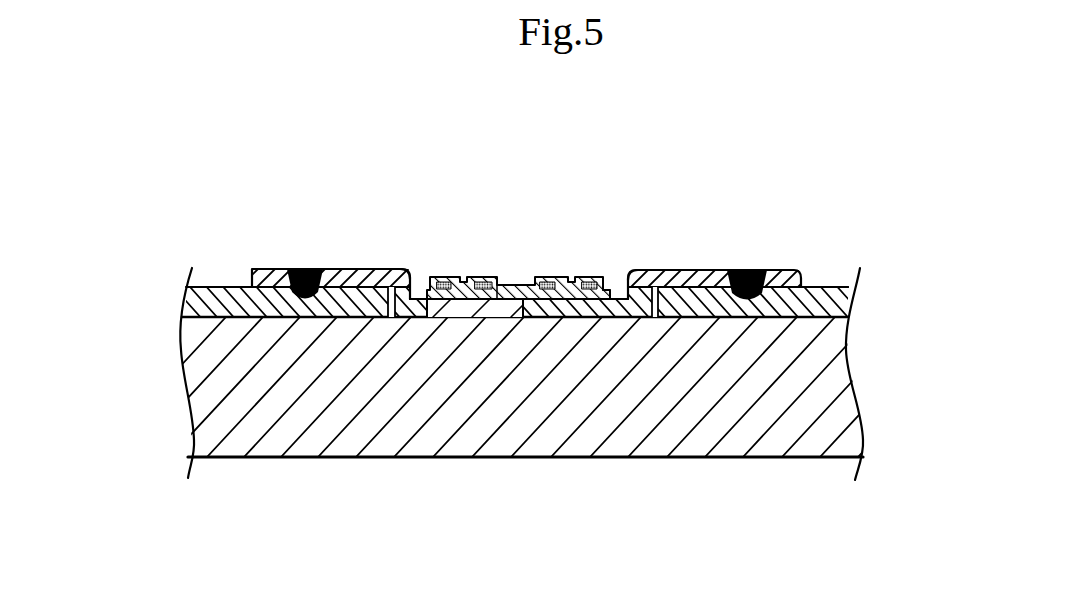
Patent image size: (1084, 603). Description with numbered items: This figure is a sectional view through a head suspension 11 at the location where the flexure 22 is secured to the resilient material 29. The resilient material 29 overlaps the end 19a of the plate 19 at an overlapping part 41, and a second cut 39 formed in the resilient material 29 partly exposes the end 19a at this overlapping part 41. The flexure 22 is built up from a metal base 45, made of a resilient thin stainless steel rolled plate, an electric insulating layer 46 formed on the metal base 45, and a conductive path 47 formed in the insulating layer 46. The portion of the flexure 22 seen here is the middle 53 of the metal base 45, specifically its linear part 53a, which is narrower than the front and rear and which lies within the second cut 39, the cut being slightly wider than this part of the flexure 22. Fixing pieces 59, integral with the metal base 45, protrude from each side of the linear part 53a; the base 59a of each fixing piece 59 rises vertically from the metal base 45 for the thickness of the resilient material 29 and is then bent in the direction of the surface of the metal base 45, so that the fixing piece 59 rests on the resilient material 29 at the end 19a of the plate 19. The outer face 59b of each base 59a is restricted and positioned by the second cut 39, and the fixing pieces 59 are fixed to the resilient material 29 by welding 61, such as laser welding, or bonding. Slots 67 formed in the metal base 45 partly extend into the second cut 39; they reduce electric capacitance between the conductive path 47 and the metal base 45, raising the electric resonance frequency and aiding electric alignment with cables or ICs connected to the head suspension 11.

The head suspension 11 is at (765, 155).
The plate 19 is at (676, 472).
The end of the plate 19a is at (607, 274).
The flexure 22 is at (522, 276).
The resilient material 29 is at (841, 278).
The second cut 39 is at (626, 288).
The overlapping part 41 is at (820, 286).
The metal base 45 is at (497, 299).
The electric insulating layer 46 is at (585, 274).
The conductive path 47 is at (440, 272).
The middle 53 is at (425, 282).
The linear part 53a is at (505, 272).
The fixing piece 59 is at (263, 268).
The base of the fixing piece 59a is at (407, 268).
The outer face of the base 59b is at (391, 295).
The welding 61 is at (305, 268).
The slots 67 is at (530, 300).